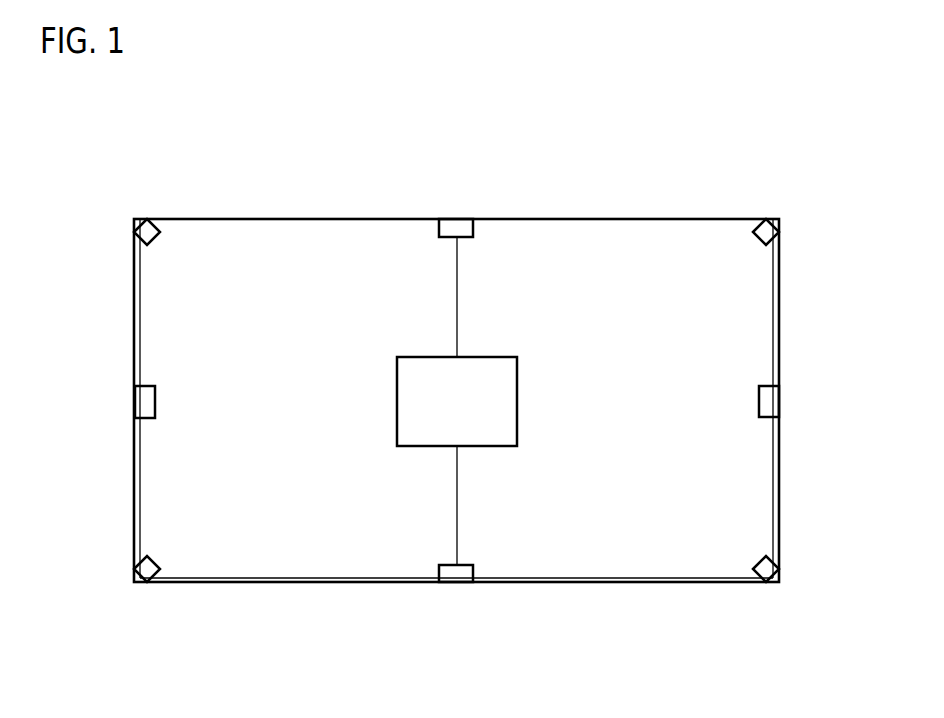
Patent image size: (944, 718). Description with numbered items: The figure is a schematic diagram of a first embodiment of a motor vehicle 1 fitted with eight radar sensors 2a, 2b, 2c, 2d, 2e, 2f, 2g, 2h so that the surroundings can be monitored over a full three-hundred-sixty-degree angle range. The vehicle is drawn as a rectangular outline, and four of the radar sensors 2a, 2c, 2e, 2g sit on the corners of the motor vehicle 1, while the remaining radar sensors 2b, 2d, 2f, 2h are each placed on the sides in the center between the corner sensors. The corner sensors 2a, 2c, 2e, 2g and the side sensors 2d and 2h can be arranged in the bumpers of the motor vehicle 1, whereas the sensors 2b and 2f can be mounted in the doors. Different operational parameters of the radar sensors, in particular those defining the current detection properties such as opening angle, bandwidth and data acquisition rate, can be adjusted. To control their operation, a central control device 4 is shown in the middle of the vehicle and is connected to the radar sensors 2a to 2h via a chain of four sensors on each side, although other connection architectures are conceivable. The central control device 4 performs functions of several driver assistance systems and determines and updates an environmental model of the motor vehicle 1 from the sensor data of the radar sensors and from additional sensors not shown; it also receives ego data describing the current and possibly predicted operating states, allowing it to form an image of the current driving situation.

The motor vehicle 1 is at (246, 218).
The radar sensor 2a is at (148, 230).
The radar sensor 2b is at (457, 228).
The radar sensor 2c is at (768, 228).
The radar sensor 2d is at (767, 398).
The radar sensor 2e is at (765, 573).
The radar sensor 2f is at (457, 575).
The radar sensor 2g is at (143, 572).
The radar sensor 2h is at (144, 402).
The central control device 4 is at (517, 407).